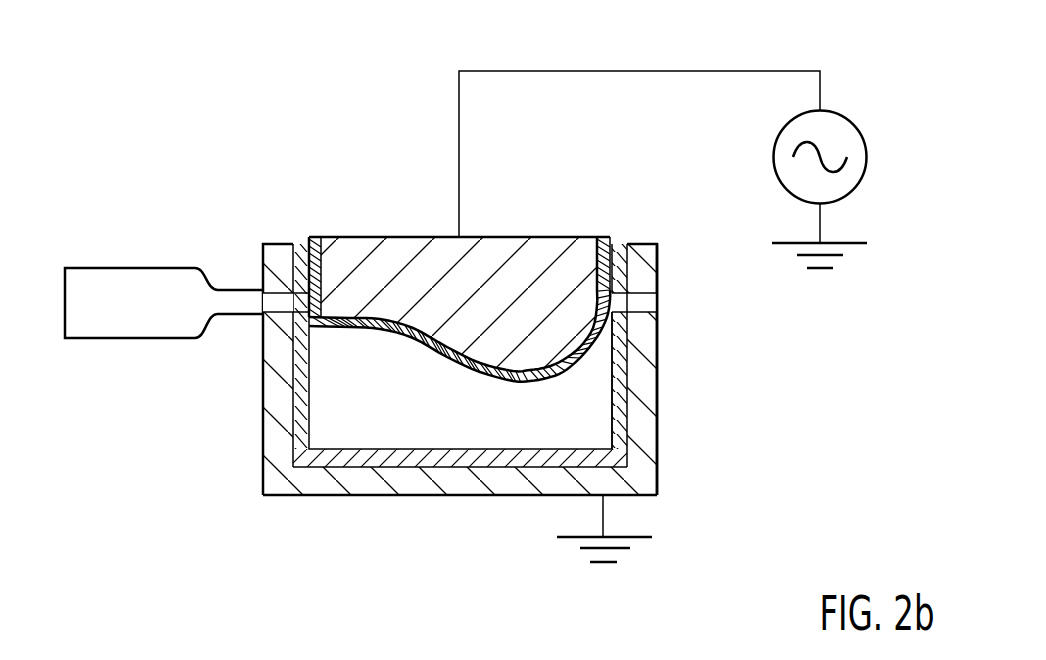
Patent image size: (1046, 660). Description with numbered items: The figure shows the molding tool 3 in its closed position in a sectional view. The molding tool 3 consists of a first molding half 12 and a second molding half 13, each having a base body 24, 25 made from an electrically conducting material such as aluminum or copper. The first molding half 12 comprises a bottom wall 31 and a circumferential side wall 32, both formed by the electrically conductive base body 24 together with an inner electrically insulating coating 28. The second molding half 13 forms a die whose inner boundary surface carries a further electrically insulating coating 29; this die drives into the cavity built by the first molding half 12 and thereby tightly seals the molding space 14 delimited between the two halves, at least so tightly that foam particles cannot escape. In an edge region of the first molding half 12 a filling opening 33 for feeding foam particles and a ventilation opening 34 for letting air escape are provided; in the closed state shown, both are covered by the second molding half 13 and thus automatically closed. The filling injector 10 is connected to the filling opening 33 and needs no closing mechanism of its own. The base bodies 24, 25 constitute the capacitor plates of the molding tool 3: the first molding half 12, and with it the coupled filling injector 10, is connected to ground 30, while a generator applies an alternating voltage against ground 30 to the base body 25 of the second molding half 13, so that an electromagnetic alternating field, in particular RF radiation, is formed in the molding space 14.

The molding tool 3 is at (250, 146).
The filling injector 10 is at (102, 320).
The first molding half 12 is at (265, 412).
The second molding half 13 is at (553, 247).
The molding space 14 is at (443, 428).
The base body 24 is at (332, 488).
The base body 25 is at (380, 247).
The electrically insulating coating 28 is at (503, 457).
The electrically insulating coating 29 is at (412, 332).
The ground 30 is at (858, 243).
The bottom wall 31 is at (442, 487).
The side wall 32 is at (645, 345).
The filling opening 33 is at (262, 267).
The ventilation opening 34 is at (645, 302).